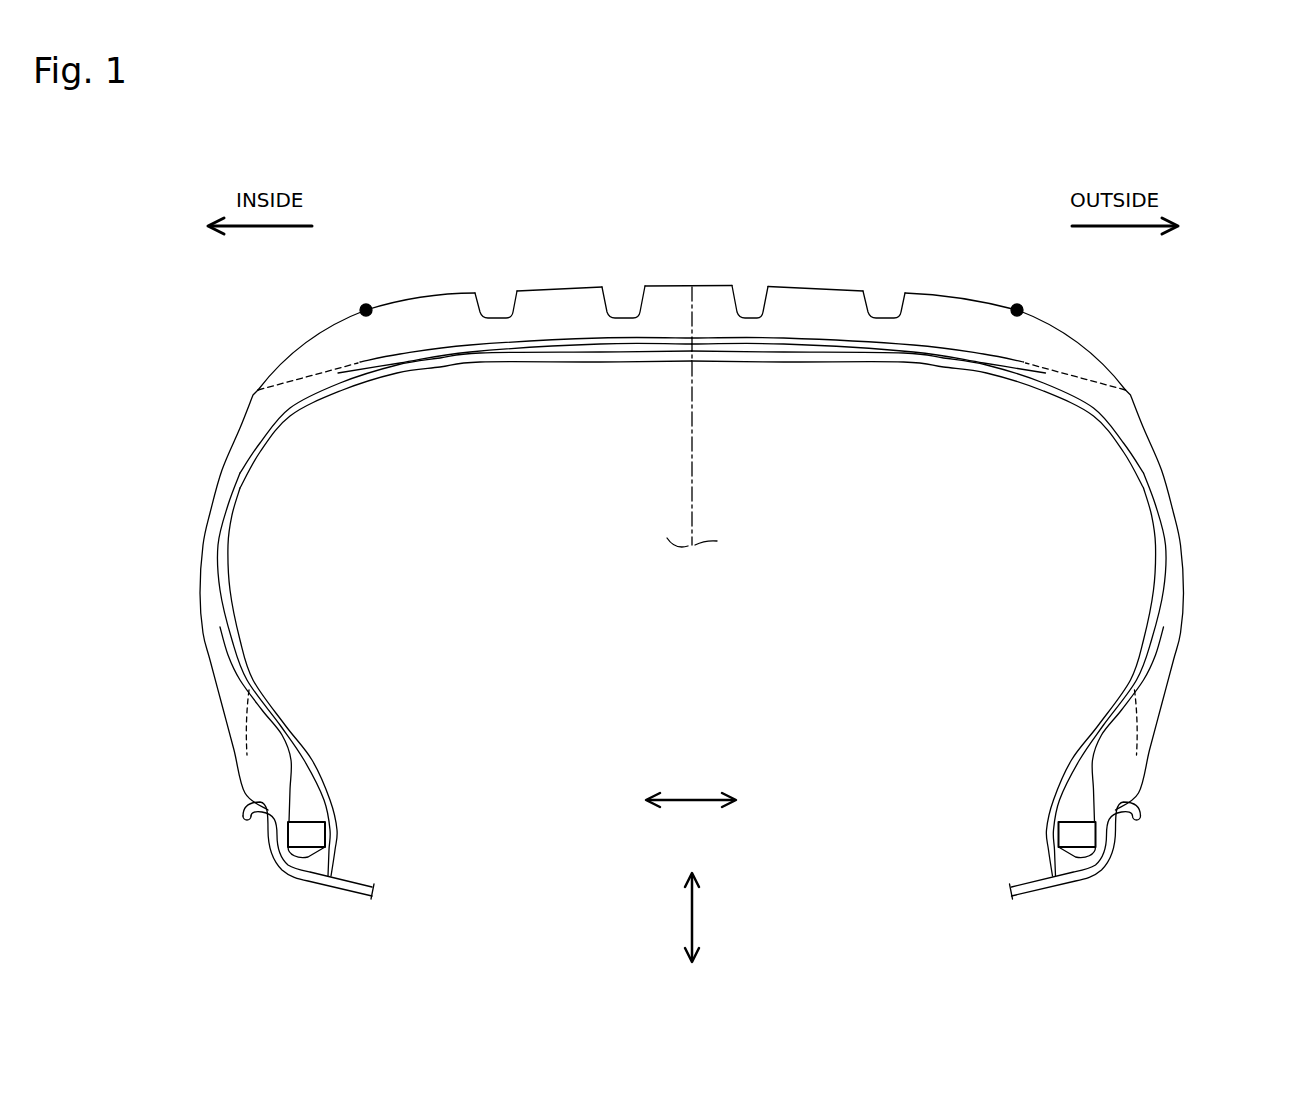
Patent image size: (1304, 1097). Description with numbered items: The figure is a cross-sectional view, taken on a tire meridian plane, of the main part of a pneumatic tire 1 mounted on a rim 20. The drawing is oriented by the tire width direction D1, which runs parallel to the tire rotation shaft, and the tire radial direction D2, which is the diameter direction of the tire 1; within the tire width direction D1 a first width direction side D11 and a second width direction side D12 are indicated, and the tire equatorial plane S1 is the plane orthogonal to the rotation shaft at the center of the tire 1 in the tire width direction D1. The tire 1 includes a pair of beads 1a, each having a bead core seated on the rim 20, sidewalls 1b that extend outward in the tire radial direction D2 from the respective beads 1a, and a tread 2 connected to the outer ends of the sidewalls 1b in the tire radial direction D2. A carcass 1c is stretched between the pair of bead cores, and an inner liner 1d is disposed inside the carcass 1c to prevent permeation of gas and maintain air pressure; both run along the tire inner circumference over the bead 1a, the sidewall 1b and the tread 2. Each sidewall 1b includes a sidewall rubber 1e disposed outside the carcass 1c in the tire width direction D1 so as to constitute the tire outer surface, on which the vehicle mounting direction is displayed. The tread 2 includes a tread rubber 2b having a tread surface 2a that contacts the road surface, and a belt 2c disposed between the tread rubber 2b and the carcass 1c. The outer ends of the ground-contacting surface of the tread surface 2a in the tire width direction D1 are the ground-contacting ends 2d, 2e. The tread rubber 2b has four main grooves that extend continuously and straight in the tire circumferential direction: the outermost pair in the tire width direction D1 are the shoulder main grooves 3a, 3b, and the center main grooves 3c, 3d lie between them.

The pneumatic tire 1 is at (1188, 288).
The bead 1a is at (243, 785).
The sidewall 1b is at (205, 468).
The carcass 1c is at (457, 366).
The inner liner 1d is at (833, 364).
The sidewall rubber 1e is at (212, 540).
The tread 2 is at (574, 277).
The tread surface 2a is at (438, 291).
The tread rubber 2b is at (805, 288).
The belt 2c is at (573, 347).
The ground-contacting end 2d is at (366, 303).
The ground-contacting end 2e is at (1017, 303).
The shoulder main groove 3a is at (496, 286).
The shoulder main groove 3b is at (882, 292).
The center main groove 3c is at (623, 287).
The center main groove 3d is at (750, 287).
The rim 20 is at (313, 888).
The tire equatorial plane S1 is at (692, 485).
The tire width direction D1 is at (691, 813).
The tire radial direction D2 is at (707, 917).
The first width direction side D11 is at (238, 226).
The second width direction side D12 is at (1149, 226).